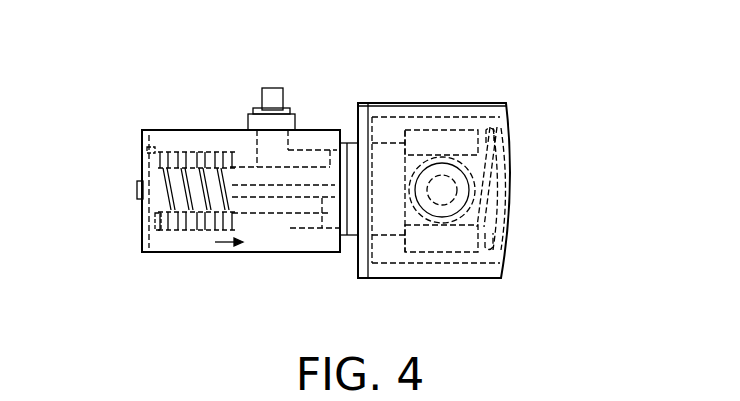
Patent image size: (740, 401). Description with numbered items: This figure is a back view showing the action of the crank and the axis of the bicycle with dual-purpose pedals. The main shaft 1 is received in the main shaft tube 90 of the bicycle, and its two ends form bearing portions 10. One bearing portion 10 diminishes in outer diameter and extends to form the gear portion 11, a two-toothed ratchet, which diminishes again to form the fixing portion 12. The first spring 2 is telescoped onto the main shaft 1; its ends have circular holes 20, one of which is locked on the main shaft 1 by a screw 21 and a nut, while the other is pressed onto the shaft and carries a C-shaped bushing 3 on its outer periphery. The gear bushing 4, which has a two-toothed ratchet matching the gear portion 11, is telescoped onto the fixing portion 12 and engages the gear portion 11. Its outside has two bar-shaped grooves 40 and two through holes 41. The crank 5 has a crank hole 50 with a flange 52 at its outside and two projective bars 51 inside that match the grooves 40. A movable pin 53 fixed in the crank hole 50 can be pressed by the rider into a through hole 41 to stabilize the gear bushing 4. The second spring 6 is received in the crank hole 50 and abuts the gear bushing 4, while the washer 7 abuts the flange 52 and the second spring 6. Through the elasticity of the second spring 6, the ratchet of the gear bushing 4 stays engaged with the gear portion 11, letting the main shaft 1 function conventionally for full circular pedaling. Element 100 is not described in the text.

The main shaft 1 is at (510, 125).
The first spring 2 is at (495, 125).
The C-shaped bushing 3 is at (447, 240).
The gear bushing 4 is at (241, 150).
The crank 5 is at (184, 120).
The second spring 6 is at (180, 232).
The washer 7 is at (140, 142).
The bearing portions 10 is at (347, 143).
The gear portion 11 is at (327, 165).
The fixing portion 12 is at (308, 158).
The circular holes 20 is at (493, 228).
The screw 21 is at (452, 188).
The grooves 40 is at (280, 197).
The through holes 41 is at (262, 218).
The crank hole 50 is at (205, 130).
The projective bars 51 is at (292, 197).
The flange 52 is at (165, 130).
The movable pin 53 is at (266, 90).
The main shaft tube 90 is at (447, 103).
The side plate 100 is at (372, 130).